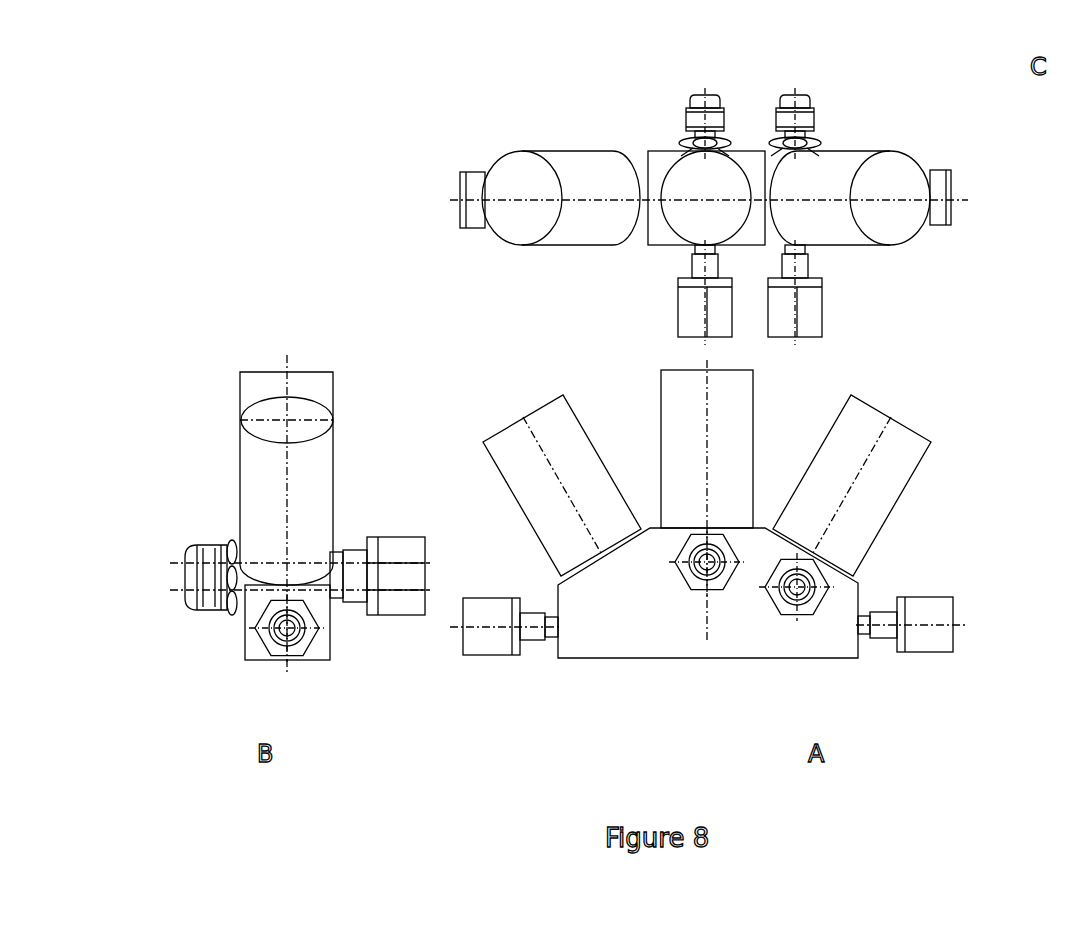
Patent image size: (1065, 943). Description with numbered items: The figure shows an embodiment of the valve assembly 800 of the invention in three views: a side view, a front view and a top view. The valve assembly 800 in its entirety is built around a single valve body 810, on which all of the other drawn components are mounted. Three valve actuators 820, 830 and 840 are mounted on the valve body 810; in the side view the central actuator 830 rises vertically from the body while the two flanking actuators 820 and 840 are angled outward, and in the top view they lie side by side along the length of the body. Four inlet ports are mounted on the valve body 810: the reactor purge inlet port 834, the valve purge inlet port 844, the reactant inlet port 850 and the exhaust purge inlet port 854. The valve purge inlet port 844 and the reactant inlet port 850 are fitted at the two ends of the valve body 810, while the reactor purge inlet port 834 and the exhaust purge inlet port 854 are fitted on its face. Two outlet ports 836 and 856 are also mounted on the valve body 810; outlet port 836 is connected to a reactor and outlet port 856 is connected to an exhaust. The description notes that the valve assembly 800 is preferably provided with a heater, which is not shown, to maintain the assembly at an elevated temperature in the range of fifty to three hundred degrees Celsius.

In FIG. 8A, the valve assembly 800 is at (743, 550).
In FIG. 8C, the valve body 810 is at (665, 245).
In FIG. 8B, the valve body 810 is at (287, 622).
In FIG. 8A, the valve body 810 is at (646, 643).
In FIG. 8C, the valve actuator 820 is at (525, 151).
In FIG. 8B, the valve actuator 820 is at (243, 500).
In FIG. 8A, the valve actuator 820 is at (507, 480).
In FIG. 8C, the valve actuator 830 is at (668, 165).
In FIG. 8B, the valve actuator 830 is at (333, 384).
In FIG. 8A, the valve actuator 830 is at (755, 422).
In FIG. 8C, the reactor purge inlet port 834 is at (678, 306).
In FIG. 8B, the reactor purge inlet port 834 is at (397, 537).
In FIG. 8A, the reactor purge inlet port 834 is at (686, 586).
In FIG. 8C, the outlet port 836 is at (688, 113).
In FIG. 8B, the outlet port 836 is at (186, 552).
In FIG. 8C, the valve actuator 840 is at (868, 151).
In FIG. 8A, the valve actuator 840 is at (915, 478).
In FIG. 8C, the valve purge inlet port 844 is at (478, 232).
In FIG. 8B, the valve purge inlet port 844 is at (297, 660).
In FIG. 8A, the valve purge inlet port 844 is at (480, 656).
In FIG. 8C, the reactant inlet port 850 is at (938, 226).
In FIG. 8A, the reactant inlet port 850 is at (950, 652).
In FIG. 8C, the exhaust purge inlet port 854 is at (823, 310).
In FIG. 8B, the exhaust purge inlet port 854 is at (393, 616).
In FIG. 8A, the exhaust purge inlet port 854 is at (815, 600).
In FIG. 8C, the outlet port 856 is at (814, 113).
In FIG. 8B, the outlet port 856 is at (186, 604).